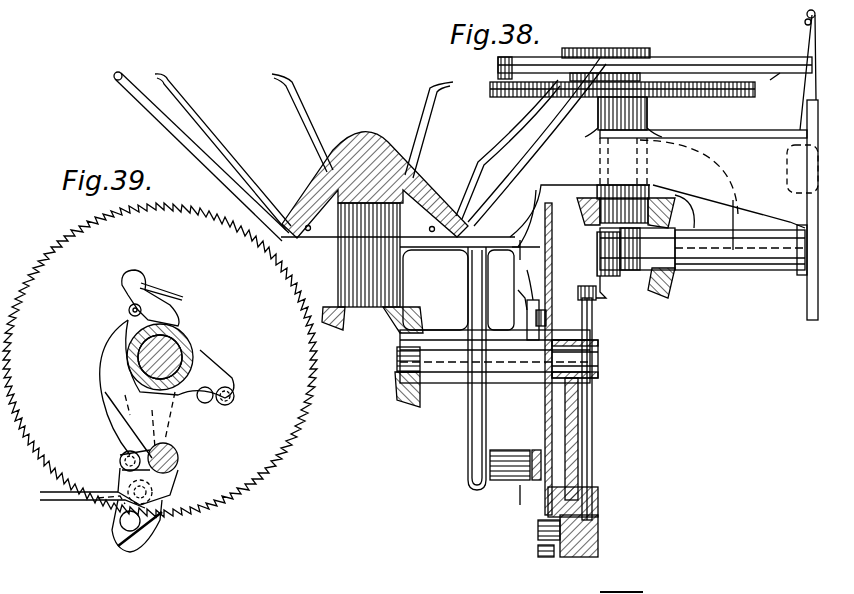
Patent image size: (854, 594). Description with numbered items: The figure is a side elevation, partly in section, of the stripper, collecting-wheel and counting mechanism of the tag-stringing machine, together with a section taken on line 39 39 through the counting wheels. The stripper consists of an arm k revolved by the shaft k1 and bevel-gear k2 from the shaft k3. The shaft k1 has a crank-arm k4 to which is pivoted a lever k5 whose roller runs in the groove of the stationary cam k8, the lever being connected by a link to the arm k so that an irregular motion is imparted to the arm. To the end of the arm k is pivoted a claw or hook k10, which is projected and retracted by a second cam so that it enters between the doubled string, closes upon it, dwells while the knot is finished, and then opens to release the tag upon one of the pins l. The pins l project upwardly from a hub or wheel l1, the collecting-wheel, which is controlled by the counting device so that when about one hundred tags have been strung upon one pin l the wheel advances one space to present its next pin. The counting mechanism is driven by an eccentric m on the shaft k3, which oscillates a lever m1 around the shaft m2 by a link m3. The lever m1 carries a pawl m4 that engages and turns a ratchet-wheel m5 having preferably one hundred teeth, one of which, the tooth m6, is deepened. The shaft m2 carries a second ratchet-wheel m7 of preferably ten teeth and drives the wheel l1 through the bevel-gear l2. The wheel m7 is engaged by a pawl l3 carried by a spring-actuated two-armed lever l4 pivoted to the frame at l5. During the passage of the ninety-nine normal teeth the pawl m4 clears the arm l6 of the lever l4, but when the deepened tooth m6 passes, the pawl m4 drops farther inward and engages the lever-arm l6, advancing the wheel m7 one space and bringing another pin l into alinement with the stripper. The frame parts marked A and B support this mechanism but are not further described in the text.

In FIG. 38, the pins l is at (360, 149).
In FIG. 38, the collecting-wheel l1 is at (368, 138).
In FIG. 38, the bevel-gear l2 is at (393, 385).
In FIG. 38, the pawl l3 is at (527, 274).
In FIG. 39, the pawl l3 is at (170, 316).
In FIG. 38, the two-armed lever l4 is at (519, 292).
In FIG. 39, the two-armed lever l4 is at (103, 375).
In FIG. 38, the pivot l5 is at (494, 480).
In FIG. 39, the pivot l5 is at (176, 453).
In FIG. 38, the lever-arm l6 is at (536, 480).
In FIG. 39, the lever-arm l6 is at (178, 490).
In FIG. 38, the eccentric m is at (597, 236).
In FIG. 38, the lever m1 is at (552, 436).
In FIG. 38, the shaft m2 is at (598, 362).
In FIG. 39, the shaft m2 is at (175, 360).
In FIG. 38, the link m3 is at (592, 466).
In FIG. 38, the pawl m4 is at (538, 527).
In FIG. 39, the pawl m4 is at (148, 535).
In FIG. 39, the ratchet-wheel m5 is at (160, 360).
In FIG. 39, the deepened tooth m6 is at (150, 520).
In FIG. 38, the ratchet-wheel m7 is at (545, 350).
In FIG. 39, the ratchet-wheel m7 is at (187, 340).
In FIG. 38, the arm k is at (655, 90).
In FIG. 38, the shaft k1 is at (645, 190).
In FIG. 38, the bevel-gear k2 is at (678, 298).
In FIG. 38, the shaft k3 is at (637, 270).
In FIG. 38, the crank-arm k4 is at (594, 48).
In FIG. 38, the lever k5 is at (526, 57).
In FIG. 38, the stationary cam k8 is at (715, 90).
In FIG. 38, the hook k10 is at (782, 87).
In FIG. 38, the post A is at (807, 112).
In FIG. 38, the bracket B is at (787, 164).
In FIG. 38, the section line 39 is at (522, 368).